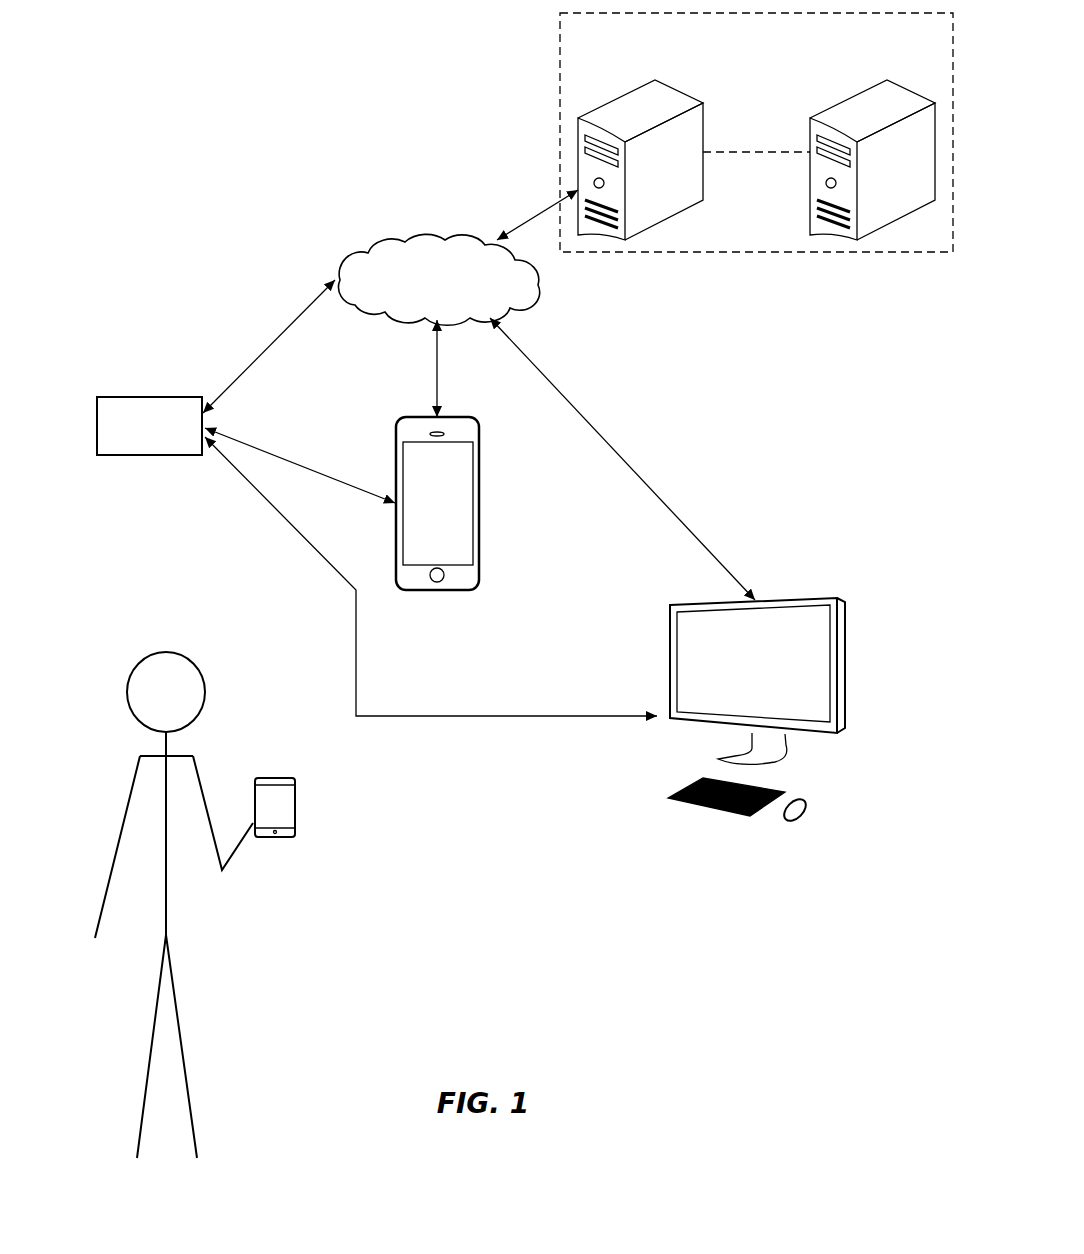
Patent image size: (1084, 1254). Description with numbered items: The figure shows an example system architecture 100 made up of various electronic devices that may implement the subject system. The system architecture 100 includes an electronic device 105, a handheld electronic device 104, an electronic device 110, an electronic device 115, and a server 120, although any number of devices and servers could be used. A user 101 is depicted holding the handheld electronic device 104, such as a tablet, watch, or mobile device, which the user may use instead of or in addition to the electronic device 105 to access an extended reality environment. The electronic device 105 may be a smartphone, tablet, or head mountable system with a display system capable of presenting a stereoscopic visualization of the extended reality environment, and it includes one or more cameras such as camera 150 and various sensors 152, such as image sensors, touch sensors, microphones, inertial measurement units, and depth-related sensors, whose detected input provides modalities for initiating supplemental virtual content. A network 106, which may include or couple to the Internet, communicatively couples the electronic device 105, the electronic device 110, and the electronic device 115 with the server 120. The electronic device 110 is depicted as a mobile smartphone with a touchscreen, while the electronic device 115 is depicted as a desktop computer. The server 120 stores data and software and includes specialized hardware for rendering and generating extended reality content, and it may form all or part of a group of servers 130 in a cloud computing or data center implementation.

The system architecture 100 is at (200, 35).
The user 101 is at (128, 803).
The handheld electronic device 104 is at (285, 778).
The electronic device 105 is at (180, 397).
The network 106 is at (436, 238).
The electronic device 110 is at (437, 590).
The electronic device 115 is at (803, 598).
The server 120 is at (615, 97).
The group of servers 130 is at (560, 118).
The camera 150 is at (150, 397).
The sensors 152 is at (97, 397).